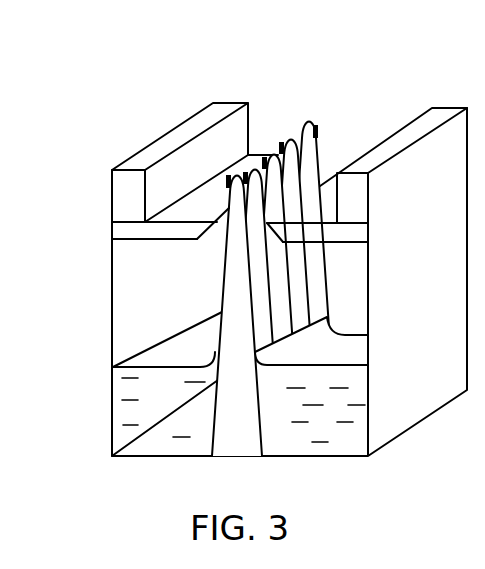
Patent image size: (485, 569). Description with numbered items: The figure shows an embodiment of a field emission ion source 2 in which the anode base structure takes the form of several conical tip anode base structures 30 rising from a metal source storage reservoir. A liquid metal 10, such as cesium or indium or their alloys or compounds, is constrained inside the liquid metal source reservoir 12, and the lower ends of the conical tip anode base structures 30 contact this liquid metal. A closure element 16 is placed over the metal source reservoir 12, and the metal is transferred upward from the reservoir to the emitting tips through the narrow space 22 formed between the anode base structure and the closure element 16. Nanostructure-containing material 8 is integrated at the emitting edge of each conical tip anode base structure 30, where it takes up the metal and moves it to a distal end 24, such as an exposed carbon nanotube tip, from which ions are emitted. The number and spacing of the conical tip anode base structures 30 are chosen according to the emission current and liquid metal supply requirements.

The field emission ion source 2 is at (256, 238).
The nanostructure-containing material 8 is at (318, 133).
The liquid metal 10 is at (171, 405).
The liquid metal source reservoir 12 is at (358, 440).
The closure element 16 is at (130, 234).
The narrow space 22 is at (205, 245).
The distal end 24 is at (316, 128).
The conical tip anode base structure 30 is at (310, 160).